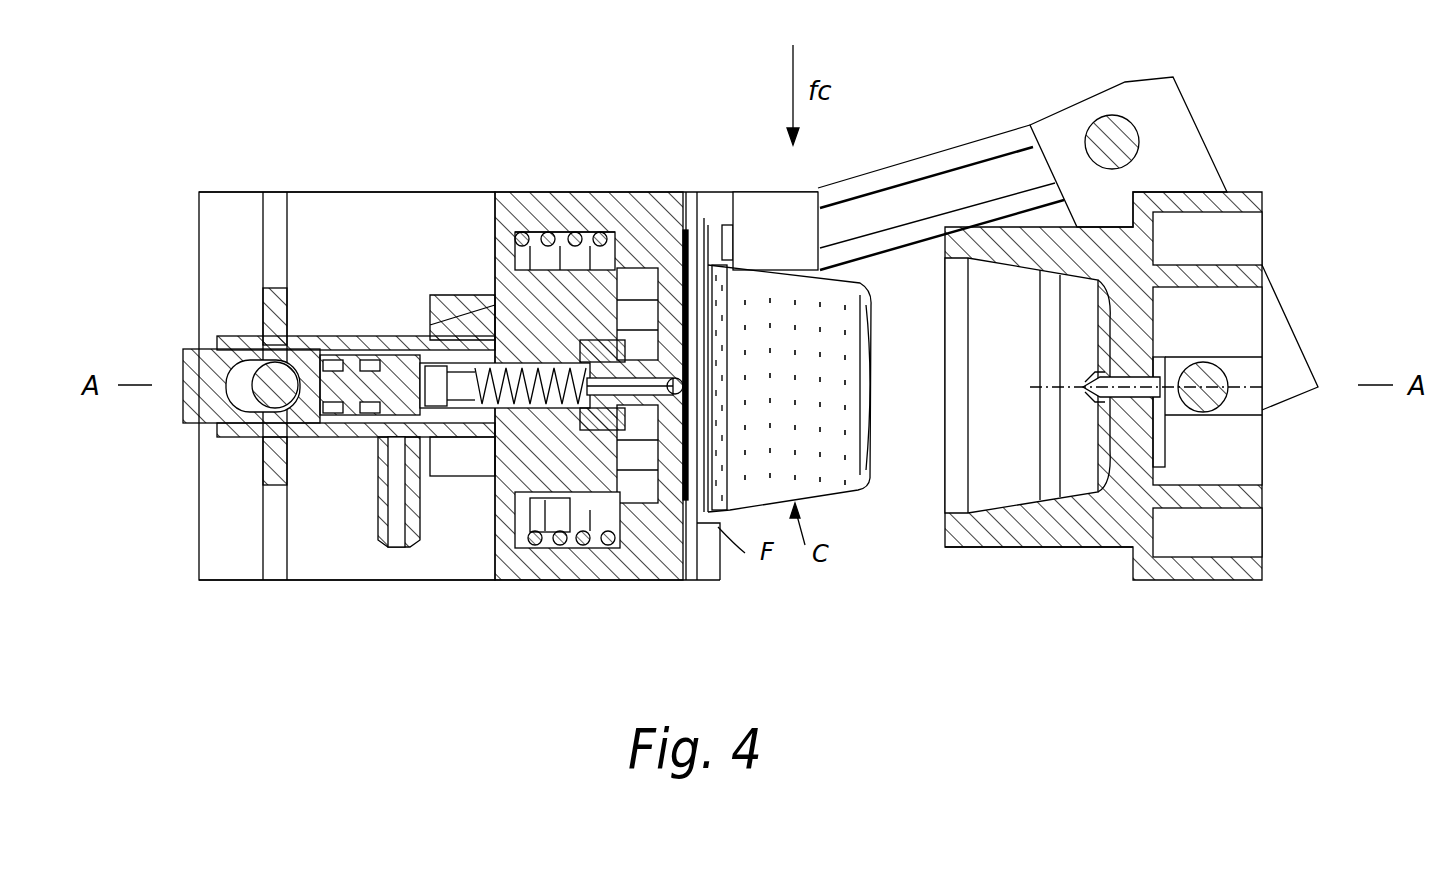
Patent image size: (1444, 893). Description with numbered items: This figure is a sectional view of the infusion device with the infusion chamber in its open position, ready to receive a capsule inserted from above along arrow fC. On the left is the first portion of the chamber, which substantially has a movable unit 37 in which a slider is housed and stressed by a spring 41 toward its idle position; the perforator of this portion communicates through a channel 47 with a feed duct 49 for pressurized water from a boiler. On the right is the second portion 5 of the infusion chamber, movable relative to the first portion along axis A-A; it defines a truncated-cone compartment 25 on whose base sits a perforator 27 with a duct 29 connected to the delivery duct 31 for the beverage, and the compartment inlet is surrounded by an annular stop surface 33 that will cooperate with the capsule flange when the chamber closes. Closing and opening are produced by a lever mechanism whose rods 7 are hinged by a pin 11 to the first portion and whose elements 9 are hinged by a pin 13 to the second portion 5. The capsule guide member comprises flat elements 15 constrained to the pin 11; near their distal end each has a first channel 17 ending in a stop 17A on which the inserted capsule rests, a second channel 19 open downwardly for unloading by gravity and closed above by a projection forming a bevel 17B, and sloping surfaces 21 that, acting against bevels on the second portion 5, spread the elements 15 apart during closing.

The second portion of the infusion chamber 5 is at (1096, 418).
The rods of the lever mechanism 7 is at (898, 190).
The elements of the lever mechanism 9 is at (1183, 140).
The pin 11 is at (220, 352).
The pin 13 is at (1215, 418).
The elements of the capsule guide member 15 is at (368, 205).
The first channel 17 is at (690, 200).
The stop 17A is at (697, 462).
The bevel 17B is at (724, 228).
The second channel 19 is at (733, 242).
The sloping surfaces 21 is at (710, 558).
The compartment 25 is at (995, 405).
The perforator 27 is at (1093, 385).
The duct 29 is at (1115, 400).
The duct for delivery of the beverage 31 is at (1178, 377).
The annular stop surface 33 is at (945, 515).
The movable unit 37 is at (570, 560).
The spring 41 is at (552, 232).
The channel 47 is at (490, 410).
The feed duct 49 is at (398, 490).